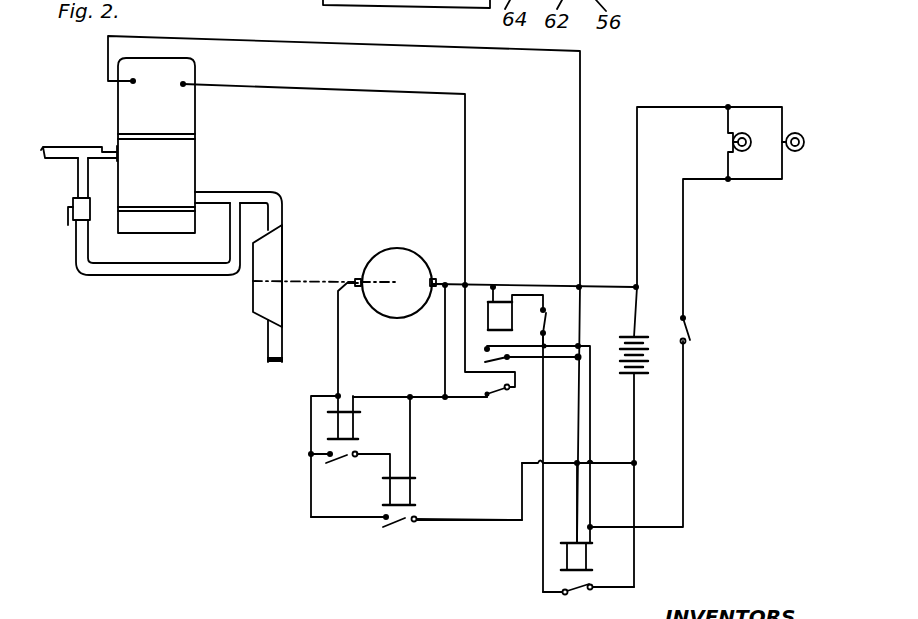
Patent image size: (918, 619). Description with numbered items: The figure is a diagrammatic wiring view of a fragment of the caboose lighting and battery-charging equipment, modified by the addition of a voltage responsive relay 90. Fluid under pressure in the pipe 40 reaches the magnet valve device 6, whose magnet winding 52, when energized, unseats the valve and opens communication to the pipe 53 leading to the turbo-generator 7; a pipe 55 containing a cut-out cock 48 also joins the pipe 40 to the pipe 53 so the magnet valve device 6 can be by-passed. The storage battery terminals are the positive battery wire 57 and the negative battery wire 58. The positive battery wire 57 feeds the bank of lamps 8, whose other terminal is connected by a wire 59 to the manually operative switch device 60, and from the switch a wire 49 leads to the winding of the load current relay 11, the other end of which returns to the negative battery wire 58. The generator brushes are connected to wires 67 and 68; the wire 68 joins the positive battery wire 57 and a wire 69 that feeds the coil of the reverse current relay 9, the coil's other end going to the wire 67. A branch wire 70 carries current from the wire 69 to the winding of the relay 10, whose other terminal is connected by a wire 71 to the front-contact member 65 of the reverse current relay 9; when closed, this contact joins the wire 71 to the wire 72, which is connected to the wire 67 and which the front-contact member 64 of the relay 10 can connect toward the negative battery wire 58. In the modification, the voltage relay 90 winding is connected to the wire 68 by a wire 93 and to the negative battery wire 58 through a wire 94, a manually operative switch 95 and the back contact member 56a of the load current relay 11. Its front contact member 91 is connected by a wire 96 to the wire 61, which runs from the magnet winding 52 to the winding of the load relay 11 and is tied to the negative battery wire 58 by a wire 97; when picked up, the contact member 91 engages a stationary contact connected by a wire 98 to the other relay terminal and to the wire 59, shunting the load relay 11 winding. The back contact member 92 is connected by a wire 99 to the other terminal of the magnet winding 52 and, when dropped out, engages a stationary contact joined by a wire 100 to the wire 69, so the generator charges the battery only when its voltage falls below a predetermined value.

The magnet valve device 6 is at (185, 116).
The turbo-generator 7 is at (380, 270).
The bank of lamps 8 is at (743, 107).
The electrical reverse current relay 9 is at (355, 421).
The electrical relay 10 is at (412, 498).
The electrical load current relay 11 is at (592, 557).
The pipe 40 is at (70, 151).
The cut-out cock 48 is at (92, 220).
The wire 49 is at (684, 476).
The magnet winding 52 is at (128, 105).
The pipe 53 is at (281, 200).
The pipe 55 is at (165, 271).
The back contact member 56a is at (587, 590).
The positive battery wire 57 is at (637, 312).
The negative battery wire 58 is at (637, 404).
The wire 59 is at (684, 227).
The manually operative switch device 60 is at (691, 330).
The wire 61 is at (318, 42).
The front-contact member 64 is at (400, 528).
The front-contact member 65 is at (343, 462).
The wire 67 is at (338, 335).
The wire 68 is at (471, 291).
The wire 69 is at (445, 335).
The branch wire 70 is at (411, 447).
The wire 71 is at (380, 463).
The wire 72 is at (311, 422).
The voltage responsive relay 90 is at (488, 327).
The front contact member 91 is at (498, 362).
The back contact member 92 is at (503, 394).
The wire 93 is at (492, 292).
The wire 94 is at (529, 296).
The manually operative switch 95 is at (551, 311).
The wire 96 is at (544, 413).
The wire 97 is at (605, 466).
The wire 98 is at (591, 400).
The wire 99 is at (467, 133).
The wire 100 is at (420, 411).